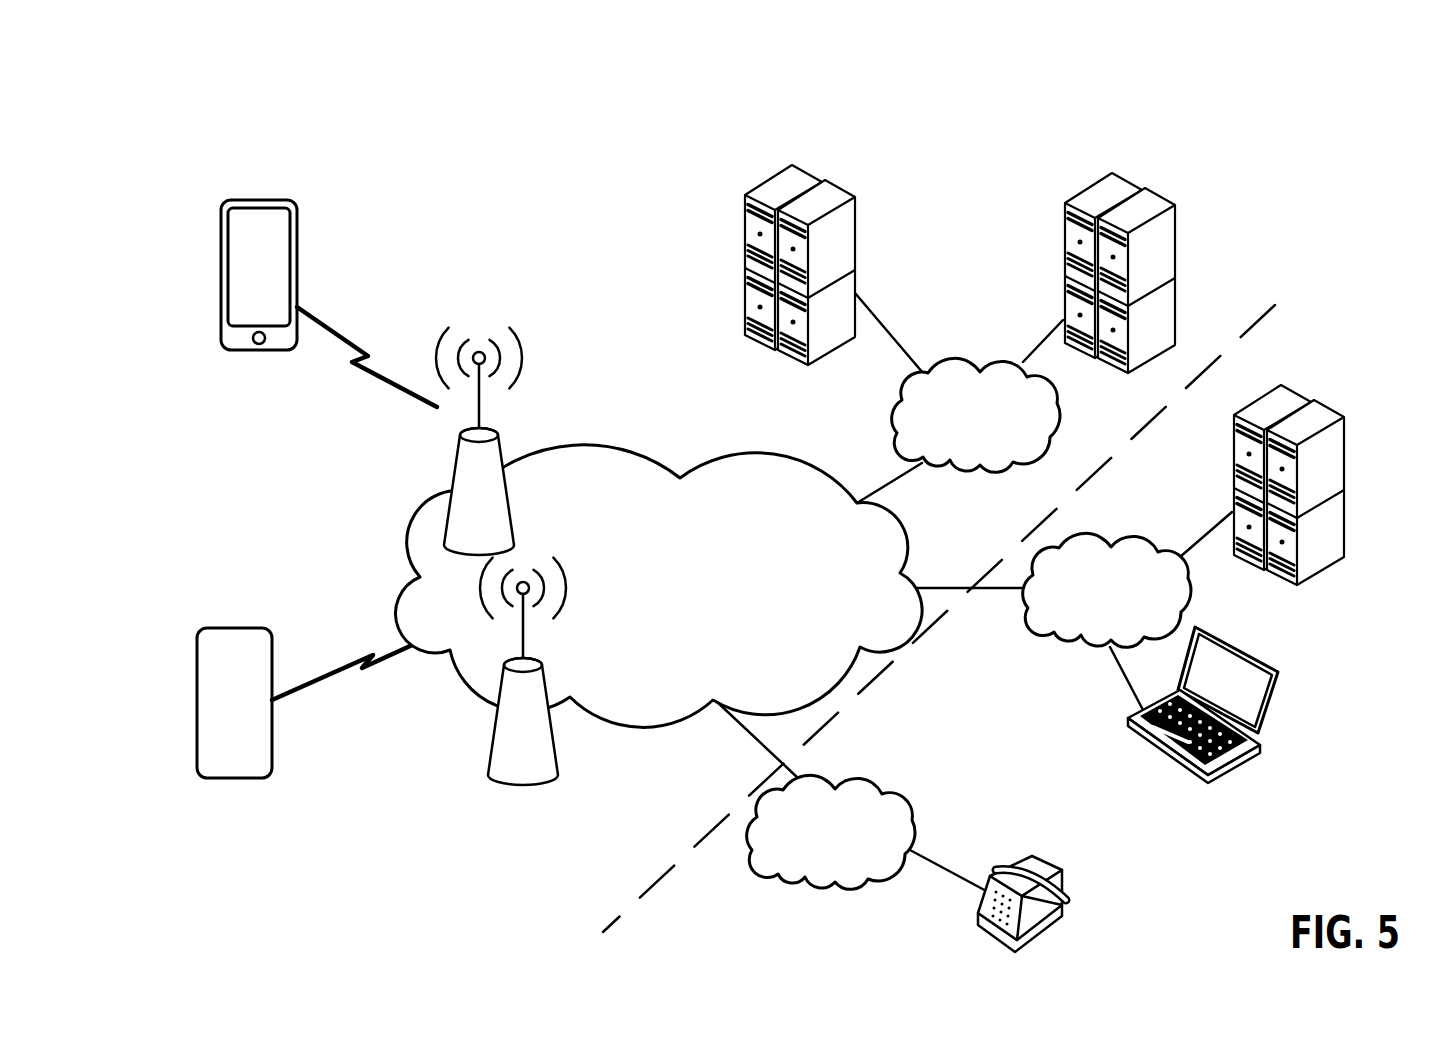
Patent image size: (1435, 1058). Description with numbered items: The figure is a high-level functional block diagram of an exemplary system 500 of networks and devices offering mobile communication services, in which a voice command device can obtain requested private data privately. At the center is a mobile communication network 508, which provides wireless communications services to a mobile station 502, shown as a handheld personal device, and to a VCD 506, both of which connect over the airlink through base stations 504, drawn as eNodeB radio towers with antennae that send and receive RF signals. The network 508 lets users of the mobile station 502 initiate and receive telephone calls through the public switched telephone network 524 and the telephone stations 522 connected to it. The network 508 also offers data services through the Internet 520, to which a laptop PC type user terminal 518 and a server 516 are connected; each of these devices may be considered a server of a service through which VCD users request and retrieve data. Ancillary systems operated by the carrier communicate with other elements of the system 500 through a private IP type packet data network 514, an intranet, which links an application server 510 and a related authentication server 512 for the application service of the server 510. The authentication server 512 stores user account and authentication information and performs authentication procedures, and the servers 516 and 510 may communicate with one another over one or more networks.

The system 500 is at (378, 139).
The mobile station 502 is at (228, 215).
The base station 504 is at (447, 450).
The VCD 506 is at (200, 668).
The mobile communication network 508 is at (622, 452).
The application server 510 is at (745, 196).
The authentication server 512 is at (1063, 203).
The private IP type packet data network 514 is at (1060, 413).
The server 516 is at (1345, 418).
The laptop PC type user terminal 518 is at (1282, 676).
The Internet 520 is at (1043, 636).
The telephone station 522 is at (1070, 897).
The public switched telephone network 524 is at (910, 800).